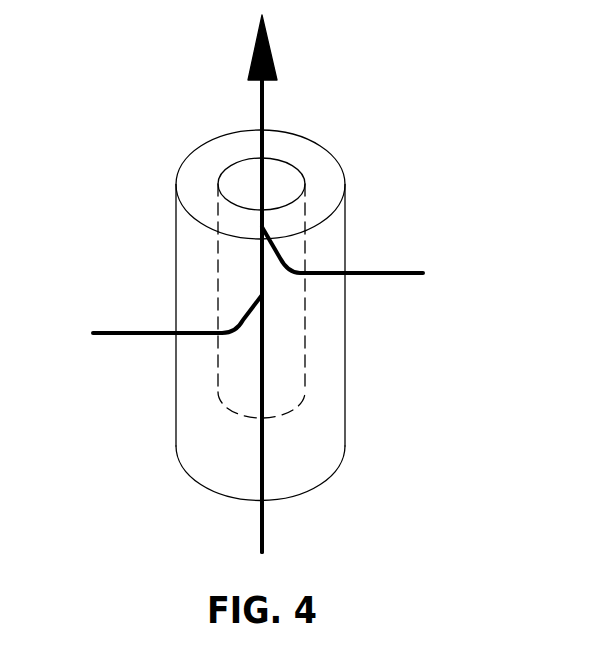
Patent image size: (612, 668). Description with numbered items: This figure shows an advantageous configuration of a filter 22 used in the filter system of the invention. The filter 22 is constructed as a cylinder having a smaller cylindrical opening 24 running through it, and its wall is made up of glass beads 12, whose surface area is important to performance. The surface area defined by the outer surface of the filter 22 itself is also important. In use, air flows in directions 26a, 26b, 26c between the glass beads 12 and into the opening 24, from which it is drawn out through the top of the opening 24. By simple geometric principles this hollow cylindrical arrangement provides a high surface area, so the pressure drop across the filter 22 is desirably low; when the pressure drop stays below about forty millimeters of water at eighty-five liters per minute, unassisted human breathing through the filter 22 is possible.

The glass beads 12 is at (308, 470).
The filter 22 is at (347, 108).
The cylindrical opening 24 is at (238, 188).
The air flow direction 26a is at (379, 276).
The air flow direction 26b is at (126, 336).
The air flow direction 26c is at (257, 519).